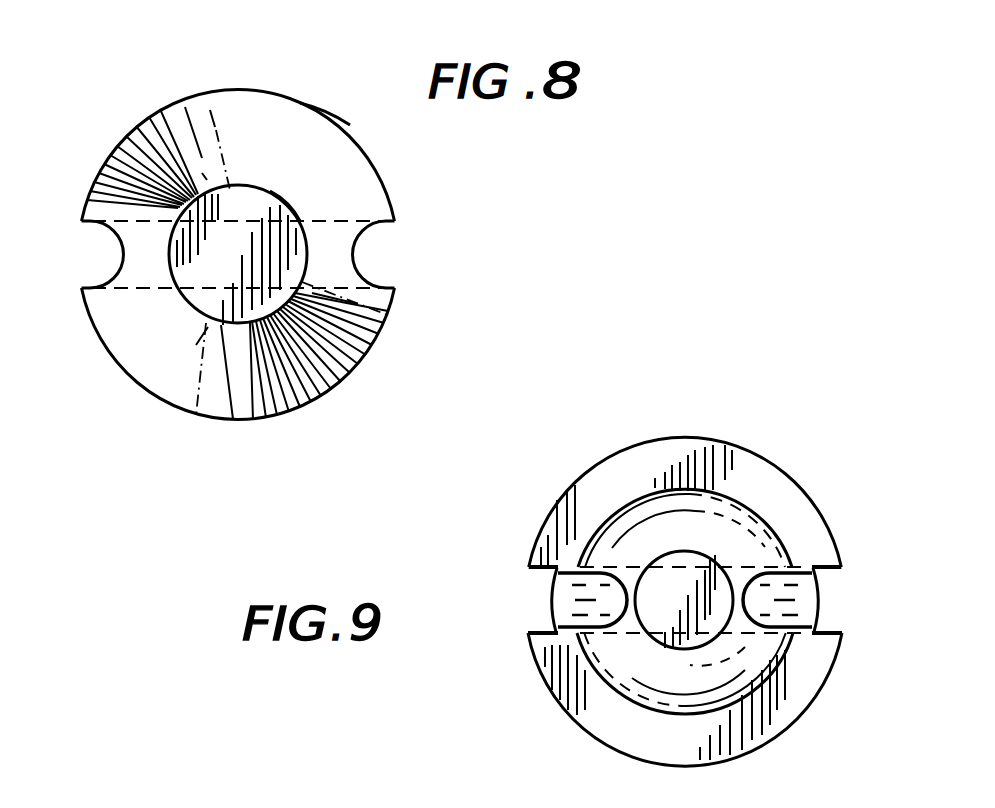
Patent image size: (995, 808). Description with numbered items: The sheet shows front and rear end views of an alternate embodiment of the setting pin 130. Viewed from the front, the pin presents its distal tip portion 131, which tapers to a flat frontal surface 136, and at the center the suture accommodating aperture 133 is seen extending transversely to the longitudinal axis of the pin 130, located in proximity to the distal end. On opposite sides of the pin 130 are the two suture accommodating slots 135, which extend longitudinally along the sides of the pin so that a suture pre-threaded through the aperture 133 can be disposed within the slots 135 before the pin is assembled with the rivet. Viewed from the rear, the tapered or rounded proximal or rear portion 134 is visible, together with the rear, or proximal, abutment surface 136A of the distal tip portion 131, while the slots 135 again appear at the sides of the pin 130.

In FIG. 8, the setting pin 130 is at (176, 90).
In FIG. 9, the setting pin 130 is at (637, 437).
In FIG. 8, the distal tip portion 131 is at (324, 112).
In FIG. 8, the suture accommodating aperture 133 is at (210, 217).
In FIG. 9, the suture accommodating aperture 133 is at (684, 600).
In FIG. 9, the proximal or rear portion 134 is at (698, 525).
In FIG. 8, the suture accommodating slots 135 is at (115, 258).
In FIG. 9, the suture accommodating slots 135 is at (556, 602).
In FIG. 8, the flat frontal surface 136 is at (281, 201).
In FIG. 9, the abutment surface 136A is at (587, 483).